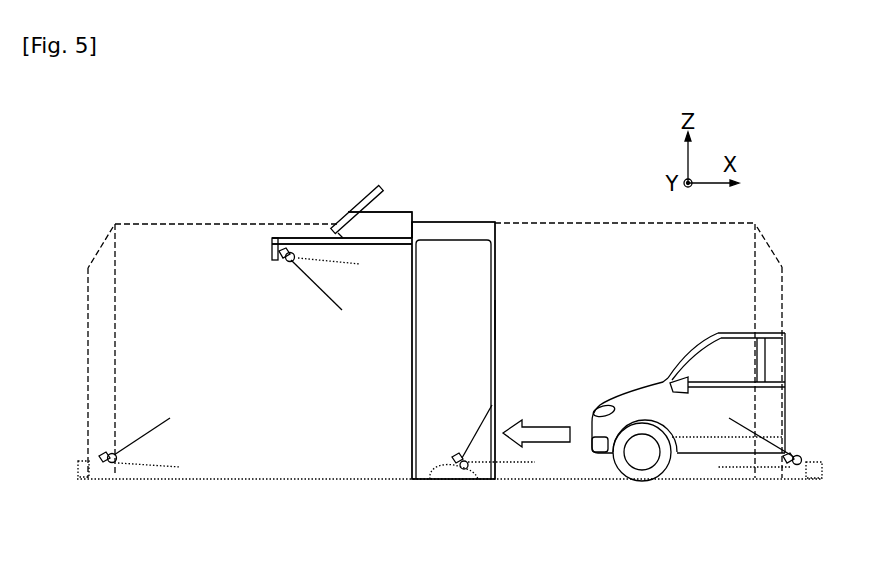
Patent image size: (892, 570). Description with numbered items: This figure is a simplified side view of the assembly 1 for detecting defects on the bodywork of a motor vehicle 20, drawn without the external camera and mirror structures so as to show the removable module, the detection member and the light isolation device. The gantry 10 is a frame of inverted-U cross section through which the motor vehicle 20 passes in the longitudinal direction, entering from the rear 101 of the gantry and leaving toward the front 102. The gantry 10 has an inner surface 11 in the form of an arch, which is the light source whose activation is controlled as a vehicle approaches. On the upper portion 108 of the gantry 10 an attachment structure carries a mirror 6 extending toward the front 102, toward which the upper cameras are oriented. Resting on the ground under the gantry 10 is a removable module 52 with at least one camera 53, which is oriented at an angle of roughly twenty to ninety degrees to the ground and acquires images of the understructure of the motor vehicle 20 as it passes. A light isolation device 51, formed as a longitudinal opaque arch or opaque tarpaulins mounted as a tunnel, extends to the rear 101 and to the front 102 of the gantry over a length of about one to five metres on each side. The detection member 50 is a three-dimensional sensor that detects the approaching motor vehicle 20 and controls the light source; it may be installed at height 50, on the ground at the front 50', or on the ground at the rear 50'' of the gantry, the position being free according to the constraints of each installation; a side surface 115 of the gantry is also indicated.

The assembly 1 is at (466, 182).
The mirror 6 is at (356, 214).
The gantry 10 is at (486, 222).
The inner surface 11 is at (480, 288).
The motor vehicle 20 is at (718, 332).
The detection member 50 is at (283, 279).
The detection member on the ground at the front 50' is at (129, 418).
The detection member on the ground at the rear 50'' is at (769, 479).
The light isolation device 51 is at (198, 396).
The removable module 52 is at (436, 481).
The camera 53 is at (456, 457).
The rear of the gantry 101 is at (544, 387).
The front of the gantry 102 is at (382, 427).
The upper portion of the gantry 108 is at (445, 219).
The pillar side surface 115 is at (497, 323).